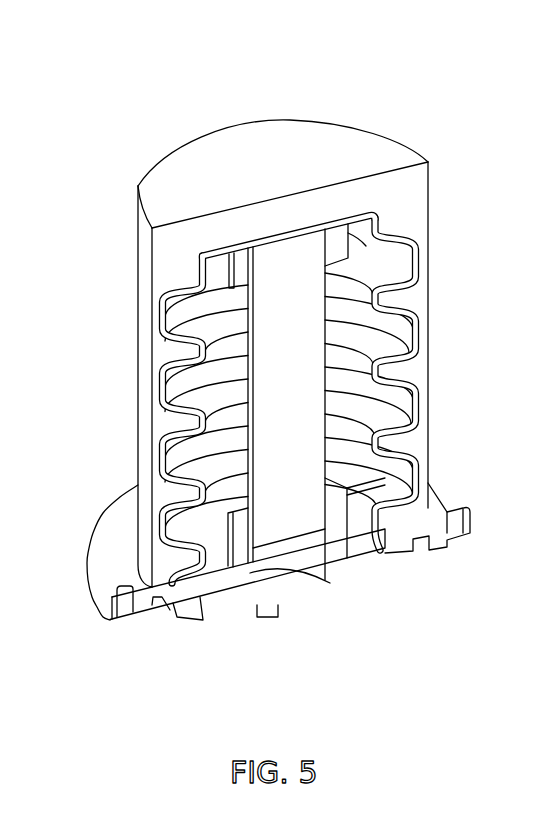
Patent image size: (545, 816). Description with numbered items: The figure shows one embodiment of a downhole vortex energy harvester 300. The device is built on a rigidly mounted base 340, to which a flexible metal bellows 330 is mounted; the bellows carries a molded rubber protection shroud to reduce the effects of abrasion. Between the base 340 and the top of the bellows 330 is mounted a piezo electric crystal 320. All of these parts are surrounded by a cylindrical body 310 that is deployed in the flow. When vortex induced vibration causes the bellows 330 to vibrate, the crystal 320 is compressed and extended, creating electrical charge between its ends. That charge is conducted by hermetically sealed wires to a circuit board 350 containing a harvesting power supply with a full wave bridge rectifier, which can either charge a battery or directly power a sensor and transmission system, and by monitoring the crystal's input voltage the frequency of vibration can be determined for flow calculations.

The downhole vortex energy harvester 300 is at (272, 356).
The cylindrical body 310 is at (183, 202).
The piezo electric crystal 320 is at (278, 383).
The flexible metal bellows 330 is at (398, 338).
The base 340 is at (355, 548).
The circuit board 350 is at (288, 597).